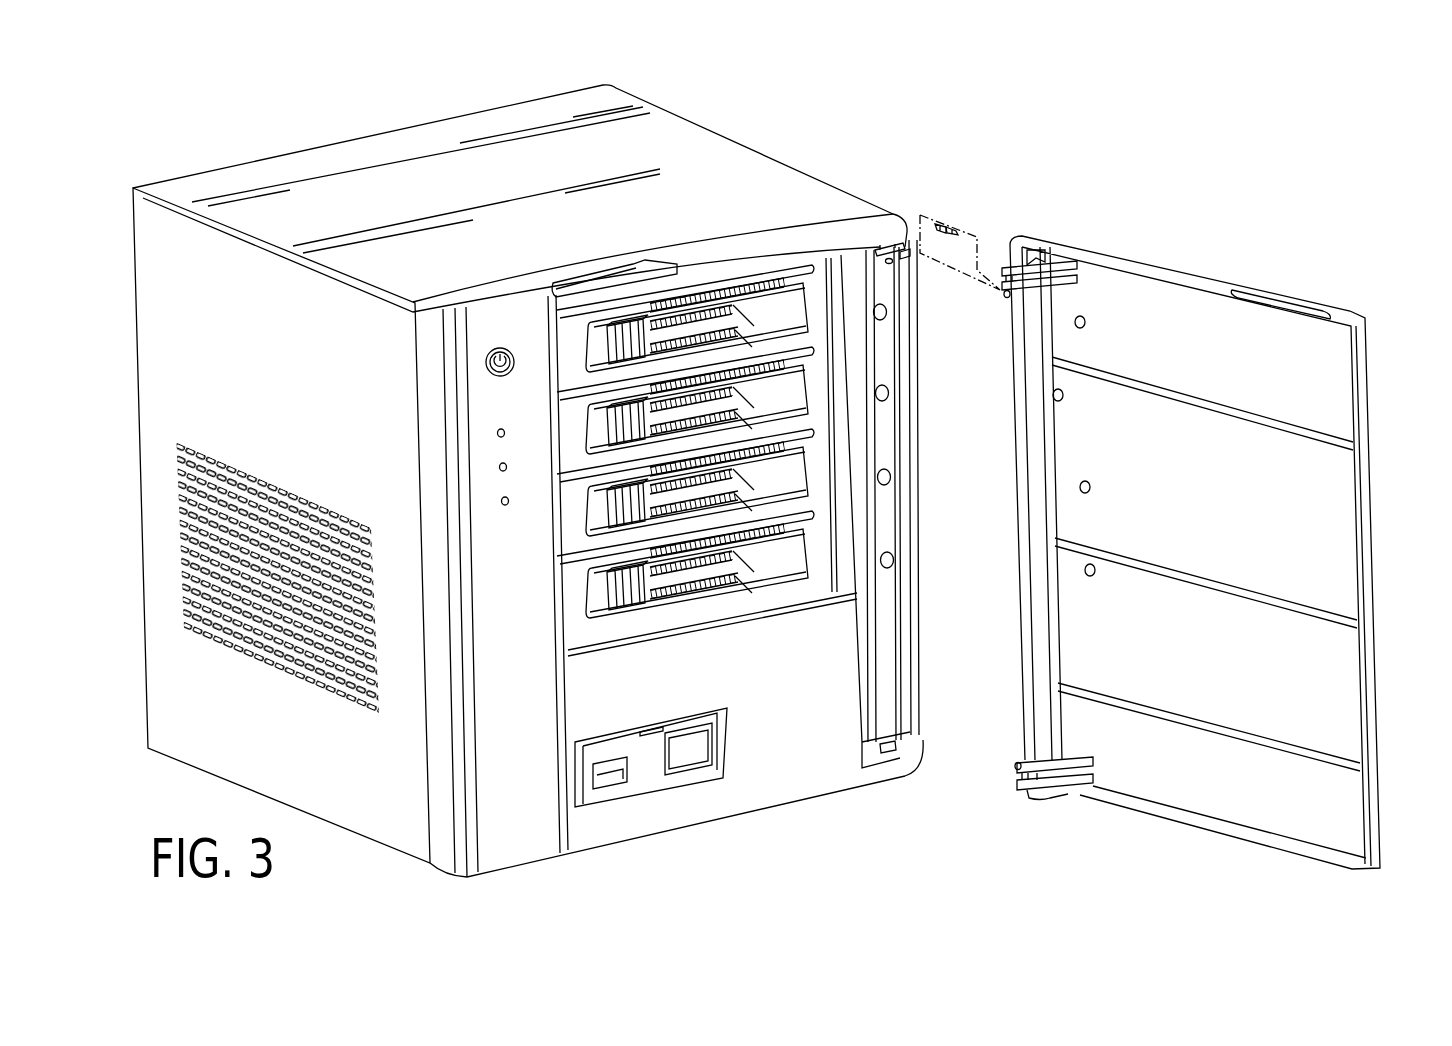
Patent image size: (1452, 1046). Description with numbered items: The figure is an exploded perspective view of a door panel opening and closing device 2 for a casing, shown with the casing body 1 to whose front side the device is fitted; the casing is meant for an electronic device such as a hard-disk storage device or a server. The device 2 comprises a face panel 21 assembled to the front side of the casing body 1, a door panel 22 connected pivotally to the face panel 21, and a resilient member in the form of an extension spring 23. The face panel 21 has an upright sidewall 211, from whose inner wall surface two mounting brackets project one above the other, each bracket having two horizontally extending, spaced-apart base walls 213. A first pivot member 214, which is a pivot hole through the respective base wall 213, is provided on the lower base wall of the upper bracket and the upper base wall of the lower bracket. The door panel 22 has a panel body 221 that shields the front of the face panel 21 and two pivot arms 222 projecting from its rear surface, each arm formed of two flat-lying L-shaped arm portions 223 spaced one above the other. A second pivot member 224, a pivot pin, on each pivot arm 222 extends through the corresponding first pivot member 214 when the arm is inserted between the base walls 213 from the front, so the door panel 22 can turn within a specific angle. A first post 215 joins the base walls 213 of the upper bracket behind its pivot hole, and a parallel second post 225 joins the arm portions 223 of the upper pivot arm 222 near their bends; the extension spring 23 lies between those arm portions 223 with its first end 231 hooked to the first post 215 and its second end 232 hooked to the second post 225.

The casing body 1 is at (767, 129).
The door panel opening and closing device 2 is at (1171, 231).
The face panel 21 is at (728, 265).
The upright sidewall 211 is at (906, 257).
The base wall 213 is at (883, 266).
The first pivot member 214 is at (890, 262).
The first post 215 is at (880, 250).
The door panel 22 is at (1335, 300).
The panel body 221 is at (1275, 320).
The pivot arm 222 is at (1058, 518).
The arm portion 223 is at (1080, 284).
The second pivot member 224 is at (1007, 297).
The second post 225 is at (1083, 326).
The extension spring 23 is at (950, 193).
The first end 231 is at (940, 224).
The second end 232 is at (957, 228).